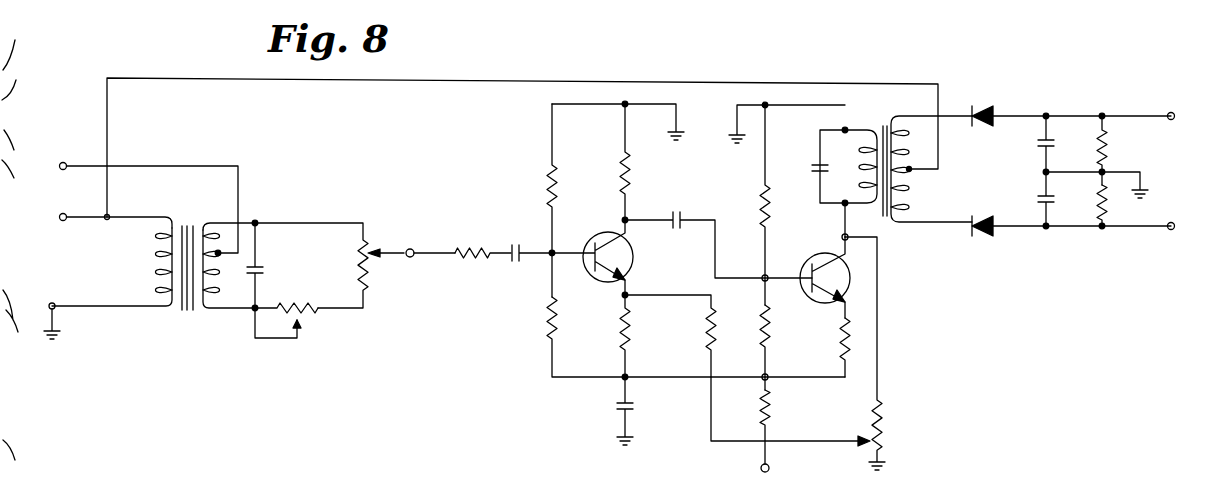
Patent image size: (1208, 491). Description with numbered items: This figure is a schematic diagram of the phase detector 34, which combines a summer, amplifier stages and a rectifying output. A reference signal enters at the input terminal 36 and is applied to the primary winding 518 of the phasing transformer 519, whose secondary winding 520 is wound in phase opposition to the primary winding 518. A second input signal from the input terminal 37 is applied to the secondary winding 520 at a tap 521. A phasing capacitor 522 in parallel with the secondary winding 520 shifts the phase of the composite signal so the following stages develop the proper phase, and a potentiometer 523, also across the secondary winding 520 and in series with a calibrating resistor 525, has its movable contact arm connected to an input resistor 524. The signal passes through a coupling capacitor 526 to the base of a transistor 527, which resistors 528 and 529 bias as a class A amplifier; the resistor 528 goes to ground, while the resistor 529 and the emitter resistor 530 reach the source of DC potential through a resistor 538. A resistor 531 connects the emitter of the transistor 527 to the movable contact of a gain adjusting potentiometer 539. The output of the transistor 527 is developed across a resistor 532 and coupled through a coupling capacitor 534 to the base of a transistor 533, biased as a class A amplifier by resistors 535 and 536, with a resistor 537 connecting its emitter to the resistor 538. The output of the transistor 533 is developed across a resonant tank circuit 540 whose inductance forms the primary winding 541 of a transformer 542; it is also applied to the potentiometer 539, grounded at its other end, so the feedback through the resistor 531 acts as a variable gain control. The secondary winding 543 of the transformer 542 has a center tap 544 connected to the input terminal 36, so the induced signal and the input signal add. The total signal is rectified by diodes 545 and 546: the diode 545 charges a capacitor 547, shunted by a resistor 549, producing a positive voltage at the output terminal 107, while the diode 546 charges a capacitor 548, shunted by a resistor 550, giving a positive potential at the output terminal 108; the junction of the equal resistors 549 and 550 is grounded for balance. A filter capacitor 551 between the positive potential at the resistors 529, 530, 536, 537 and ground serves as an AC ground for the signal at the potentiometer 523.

The phase detector 34 is at (371, 156).
The input terminal 36 is at (66, 220).
The input terminal 37 is at (63, 162).
The output terminal 107 is at (1180, 101).
The output terminal 108 is at (1171, 231).
The primary winding 518 is at (163, 240).
The transformer 519 is at (181, 312).
The secondary winding 520 is at (217, 301).
The tap 521 is at (218, 253).
The phasing capacitor 522 is at (265, 274).
The potentiometer 523 is at (368, 260).
The input resistor 524 is at (480, 249).
The calibrating resistor 525 is at (306, 310).
The coupling capacitor 526 is at (514, 264).
The transistor 527 is at (634, 257).
The resistor 528 is at (553, 186).
The resistor 529 is at (550, 326).
The resistor 530 is at (621, 317).
The resistor 531 is at (708, 336).
The resistor 532 is at (622, 172).
The transistor 533 is at (806, 269).
The coupling capacitor 534 is at (672, 216).
The resistor 535 is at (762, 212).
The resistor 536 is at (768, 338).
The resistor 537 is at (840, 338).
The resistor 538 is at (772, 421).
The gain adjusting potentiometer 539 is at (882, 418).
The resonant tank circuit 540 is at (849, 151).
The primary winding 541 is at (870, 166).
The transformer 542 is at (889, 222).
The secondary winding 543 is at (908, 209).
The center tap 544 is at (910, 172).
The diode 545 is at (984, 109).
The diode 546 is at (988, 227).
The capacitor 547 is at (1040, 140).
The capacitor 548 is at (1042, 200).
The resistor 549 is at (1110, 146).
The resistor 550 is at (1100, 188).
The filter capacitor 551 is at (620, 406).